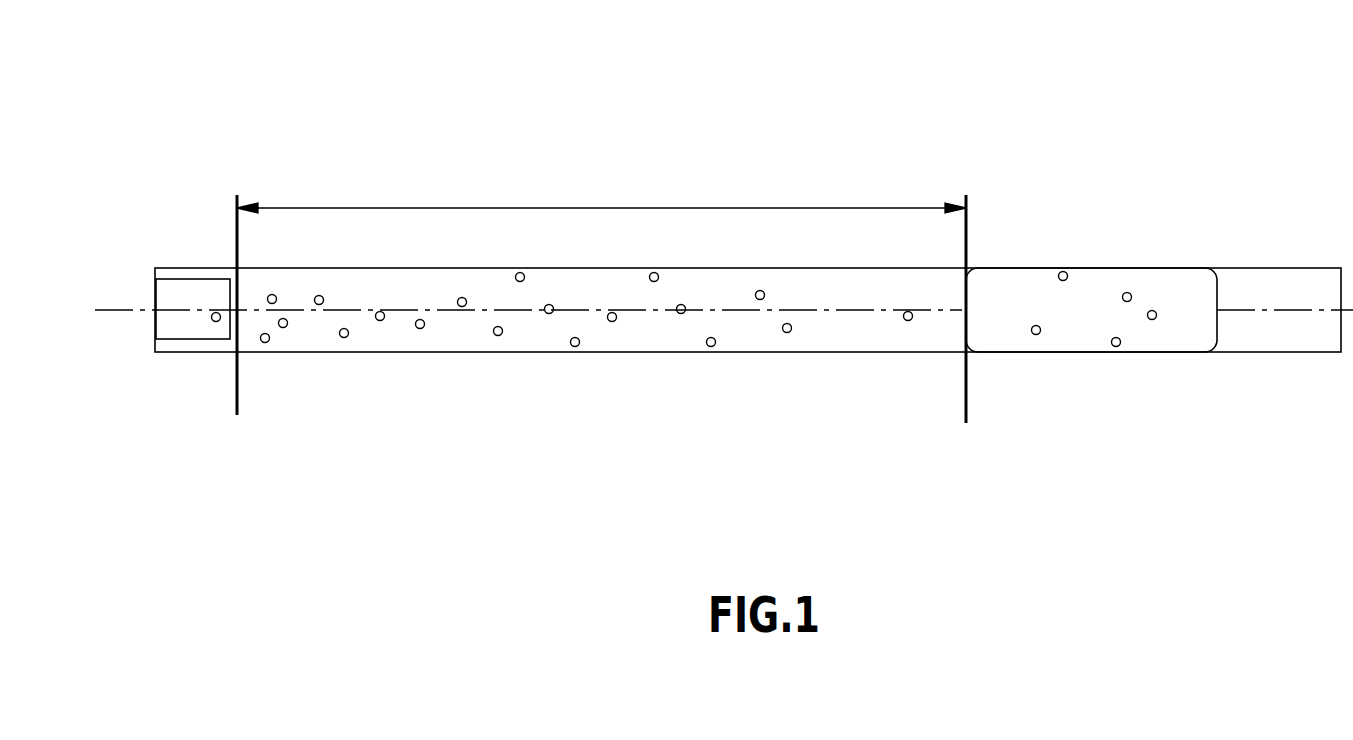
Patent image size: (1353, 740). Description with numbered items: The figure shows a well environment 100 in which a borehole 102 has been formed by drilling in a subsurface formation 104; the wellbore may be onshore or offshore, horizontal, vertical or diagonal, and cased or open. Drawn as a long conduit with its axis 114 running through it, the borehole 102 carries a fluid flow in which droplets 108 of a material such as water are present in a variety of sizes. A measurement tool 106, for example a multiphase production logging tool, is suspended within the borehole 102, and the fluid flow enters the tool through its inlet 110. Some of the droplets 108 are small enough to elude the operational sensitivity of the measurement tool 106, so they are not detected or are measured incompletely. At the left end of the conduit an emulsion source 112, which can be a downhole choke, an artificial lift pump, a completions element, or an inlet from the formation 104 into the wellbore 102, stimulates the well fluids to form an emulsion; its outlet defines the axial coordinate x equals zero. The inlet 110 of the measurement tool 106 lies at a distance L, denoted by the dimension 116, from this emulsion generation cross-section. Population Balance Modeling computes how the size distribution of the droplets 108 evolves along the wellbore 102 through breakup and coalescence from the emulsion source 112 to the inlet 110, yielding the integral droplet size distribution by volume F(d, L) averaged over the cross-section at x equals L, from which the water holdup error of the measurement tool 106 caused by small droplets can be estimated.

The well environment 100 is at (1028, 102).
The borehole 102 is at (646, 334).
The subsurface formation 104 is at (807, 144).
The measurement tool 106 is at (1172, 337).
The droplets 108 is at (495, 334).
The inlet 110 is at (960, 333).
The emulsion source 112 is at (198, 296).
The axis 114 is at (1277, 308).
The distance L 116 is at (522, 207).